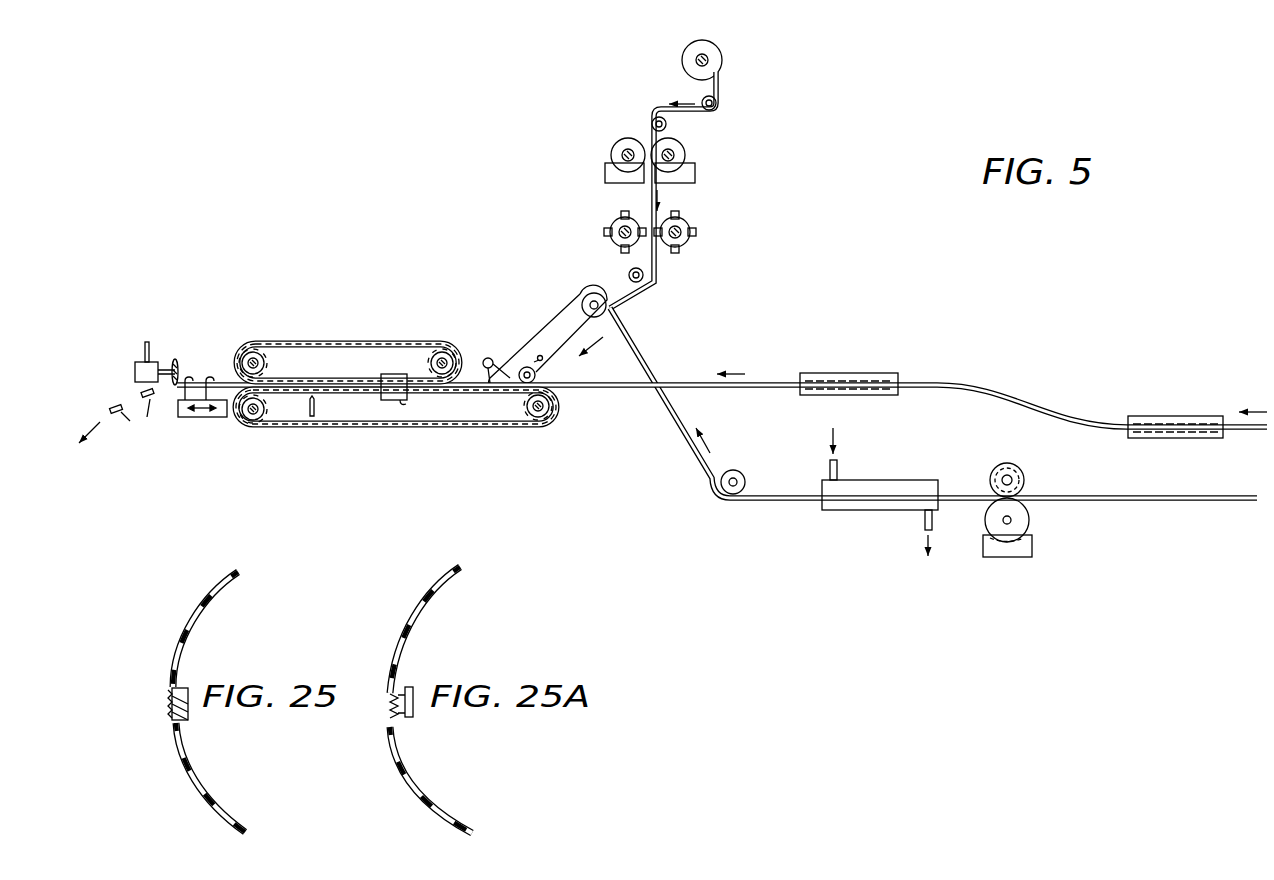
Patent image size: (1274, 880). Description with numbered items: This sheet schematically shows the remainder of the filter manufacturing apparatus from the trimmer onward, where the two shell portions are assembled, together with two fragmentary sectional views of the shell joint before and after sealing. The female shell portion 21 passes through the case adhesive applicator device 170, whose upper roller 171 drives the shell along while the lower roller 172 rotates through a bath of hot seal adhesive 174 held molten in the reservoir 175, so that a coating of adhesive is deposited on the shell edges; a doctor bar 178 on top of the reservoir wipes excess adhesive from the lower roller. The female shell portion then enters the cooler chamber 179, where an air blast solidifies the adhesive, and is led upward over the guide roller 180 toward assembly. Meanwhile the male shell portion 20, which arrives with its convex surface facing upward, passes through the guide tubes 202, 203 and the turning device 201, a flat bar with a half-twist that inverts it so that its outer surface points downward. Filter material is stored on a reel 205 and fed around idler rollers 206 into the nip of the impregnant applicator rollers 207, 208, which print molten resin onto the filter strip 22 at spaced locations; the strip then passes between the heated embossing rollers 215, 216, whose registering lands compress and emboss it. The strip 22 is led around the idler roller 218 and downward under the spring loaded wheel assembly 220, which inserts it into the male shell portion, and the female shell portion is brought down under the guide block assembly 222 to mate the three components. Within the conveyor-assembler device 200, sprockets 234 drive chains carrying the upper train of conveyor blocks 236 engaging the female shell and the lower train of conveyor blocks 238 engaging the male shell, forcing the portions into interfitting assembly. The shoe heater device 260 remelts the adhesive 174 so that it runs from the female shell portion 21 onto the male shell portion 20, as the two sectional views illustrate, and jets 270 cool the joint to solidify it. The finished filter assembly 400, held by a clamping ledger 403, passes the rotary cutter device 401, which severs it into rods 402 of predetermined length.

In FIG. 5, the reel 205 is at (723, 58).
In FIG. 5, the idler rollers 206 is at (668, 86).
In FIG. 5, the impregnant applicator roller 208 is at (627, 139).
In FIG. 5, the impregnant applicator roller 207 is at (679, 147).
In FIG. 5, the heated embossing roller 216 is at (607, 221).
In FIG. 5, the heated embossing roller 215 is at (697, 220).
In FIG. 5, the idler roller 218 is at (626, 275).
In FIG. 5, the filter strip 22 is at (653, 263).
In FIG. 5, the guide roller 180 is at (583, 300).
In FIG. 5, the guide block assembly 222 is at (512, 366).
In FIG. 5, the spring loaded wheel assembly 220 is at (536, 375).
In FIG. 5, the female shell portion 21 is at (640, 357).
In FIG. 25, the female shell portion 21 is at (215, 602).
In FIG. 25A, the female shell portion 21 is at (424, 606).
In FIG. 5, the male shell portion 20 is at (632, 390).
In FIG. 25, the male shell portion 20 is at (221, 799).
In FIG. 25A, the male shell portion 20 is at (443, 799).
In FIG. 5, the turning device 201 is at (1032, 408).
In FIG. 5, the guide tube 202 is at (1171, 421).
In FIG. 5, the guide tube 203 is at (853, 373).
In FIG. 5, the sprockets 234 is at (267, 363).
In FIG. 5, the upper train of conveyor blocks 236 is at (334, 341).
In FIG. 5, the lower train of conveyor blocks 238 is at (393, 427).
In FIG. 5, the conveyor-assembler device 200 is at (433, 322).
In FIG. 5, the jets 270 is at (315, 408).
In FIG. 5, the shoe heater device 260 is at (404, 403).
In FIG. 5, the rotary cutter device 401 is at (167, 353).
In FIG. 5, the filter assembly 400 is at (202, 377).
In FIG. 5, the rods 402 is at (134, 418).
In FIG. 5, the clamping ledger 403 is at (205, 420).
In FIG. 5, the cooler chamber 179 is at (905, 482).
In FIG. 5, the upper roller 171 is at (1024, 473).
In FIG. 5, the lower roller 172 is at (1030, 517).
In FIG. 5, the doctor bar 178 is at (983, 528).
In FIG. 5, the reservoir 175 is at (1013, 554).
In FIG. 5, the case adhesive applicator device 170 is at (1043, 549).
In FIG. 25, the adhesive 174 is at (174, 712).
In FIG. 25A, the adhesive 174 is at (393, 722).